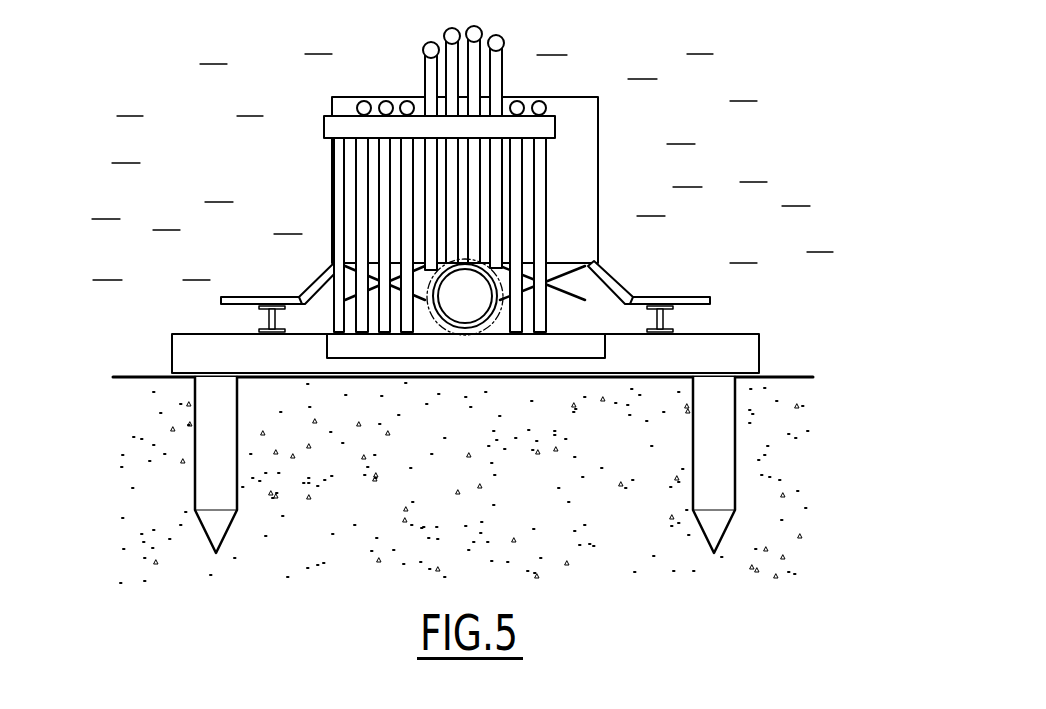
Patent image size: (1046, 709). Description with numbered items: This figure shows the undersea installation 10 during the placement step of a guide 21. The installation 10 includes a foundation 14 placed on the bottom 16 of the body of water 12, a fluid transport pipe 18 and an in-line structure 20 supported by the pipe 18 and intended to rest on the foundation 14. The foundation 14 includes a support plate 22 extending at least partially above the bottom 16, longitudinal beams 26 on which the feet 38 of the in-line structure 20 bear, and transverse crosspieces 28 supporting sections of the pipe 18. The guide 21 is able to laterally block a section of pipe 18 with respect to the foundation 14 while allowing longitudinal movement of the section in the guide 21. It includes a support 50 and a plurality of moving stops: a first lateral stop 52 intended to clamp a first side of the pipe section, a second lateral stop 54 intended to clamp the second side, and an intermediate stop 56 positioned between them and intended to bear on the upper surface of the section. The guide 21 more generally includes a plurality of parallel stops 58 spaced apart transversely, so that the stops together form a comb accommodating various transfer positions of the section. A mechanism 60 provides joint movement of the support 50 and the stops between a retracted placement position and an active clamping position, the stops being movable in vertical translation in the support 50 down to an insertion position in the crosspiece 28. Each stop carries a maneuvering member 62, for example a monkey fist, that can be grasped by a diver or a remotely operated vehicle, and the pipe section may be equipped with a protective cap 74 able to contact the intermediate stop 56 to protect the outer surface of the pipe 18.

The undersea installation 10 is at (713, 85).
The body of water 12 is at (697, 111).
The foundation 14 is at (782, 356).
The bottom of the body of water 16 is at (143, 398).
The fluid transport pipe 18 is at (467, 352).
The in-line structure 20 is at (278, 155).
The guide 21 is at (577, 84).
The support plate 22 is at (760, 342).
The longitudinal beams 26 is at (262, 318).
The transverse crosspieces 28 is at (580, 356).
The feet 38 is at (302, 297).
The support 50 is at (325, 123).
The first lateral stop 52 is at (430, 272).
The second lateral stop 54 is at (502, 305).
The intermediate stop 56 is at (447, 45).
The parallel stops 58 is at (360, 278).
The mechanism for joint movement 60 is at (340, 205).
The maneuvering member 62 is at (362, 100).
The protective cap 74 is at (486, 332).